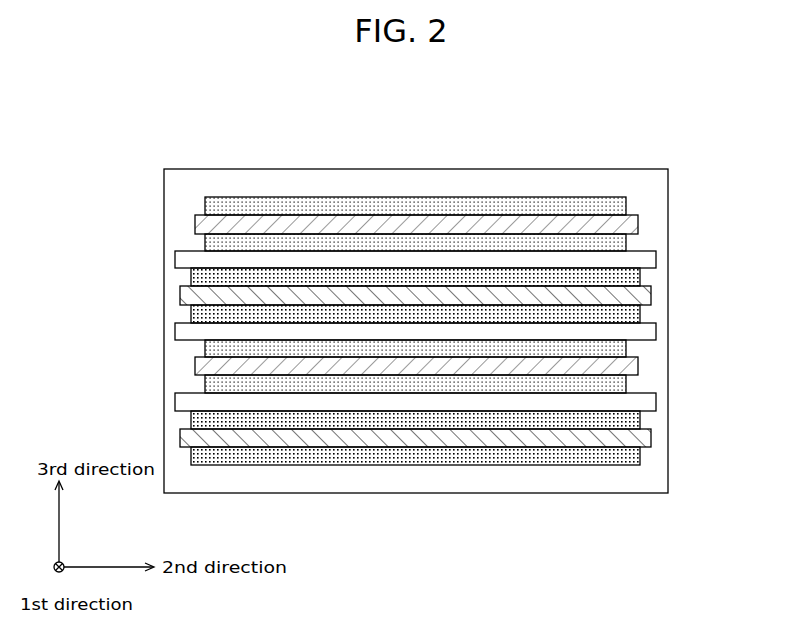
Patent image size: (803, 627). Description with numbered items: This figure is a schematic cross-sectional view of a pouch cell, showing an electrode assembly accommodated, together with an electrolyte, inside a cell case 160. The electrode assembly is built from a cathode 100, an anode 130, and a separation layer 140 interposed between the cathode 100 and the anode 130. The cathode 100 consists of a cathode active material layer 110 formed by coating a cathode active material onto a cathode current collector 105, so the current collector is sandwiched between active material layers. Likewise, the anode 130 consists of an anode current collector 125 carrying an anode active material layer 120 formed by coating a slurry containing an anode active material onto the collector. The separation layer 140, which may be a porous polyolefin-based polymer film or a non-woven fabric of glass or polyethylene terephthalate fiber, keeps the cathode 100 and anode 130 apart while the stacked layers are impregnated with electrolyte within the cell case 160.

The cathode 100 is at (485, 295).
The cathode current collector 105 is at (638, 222).
The cathode active material layer 110 is at (626, 204).
The anode active material layer 120 is at (640, 276).
The anode current collector 125 is at (651, 295).
The anode 130 is at (478, 366).
The separation layer 140 is at (563, 262).
The cell case 160 is at (668, 437).